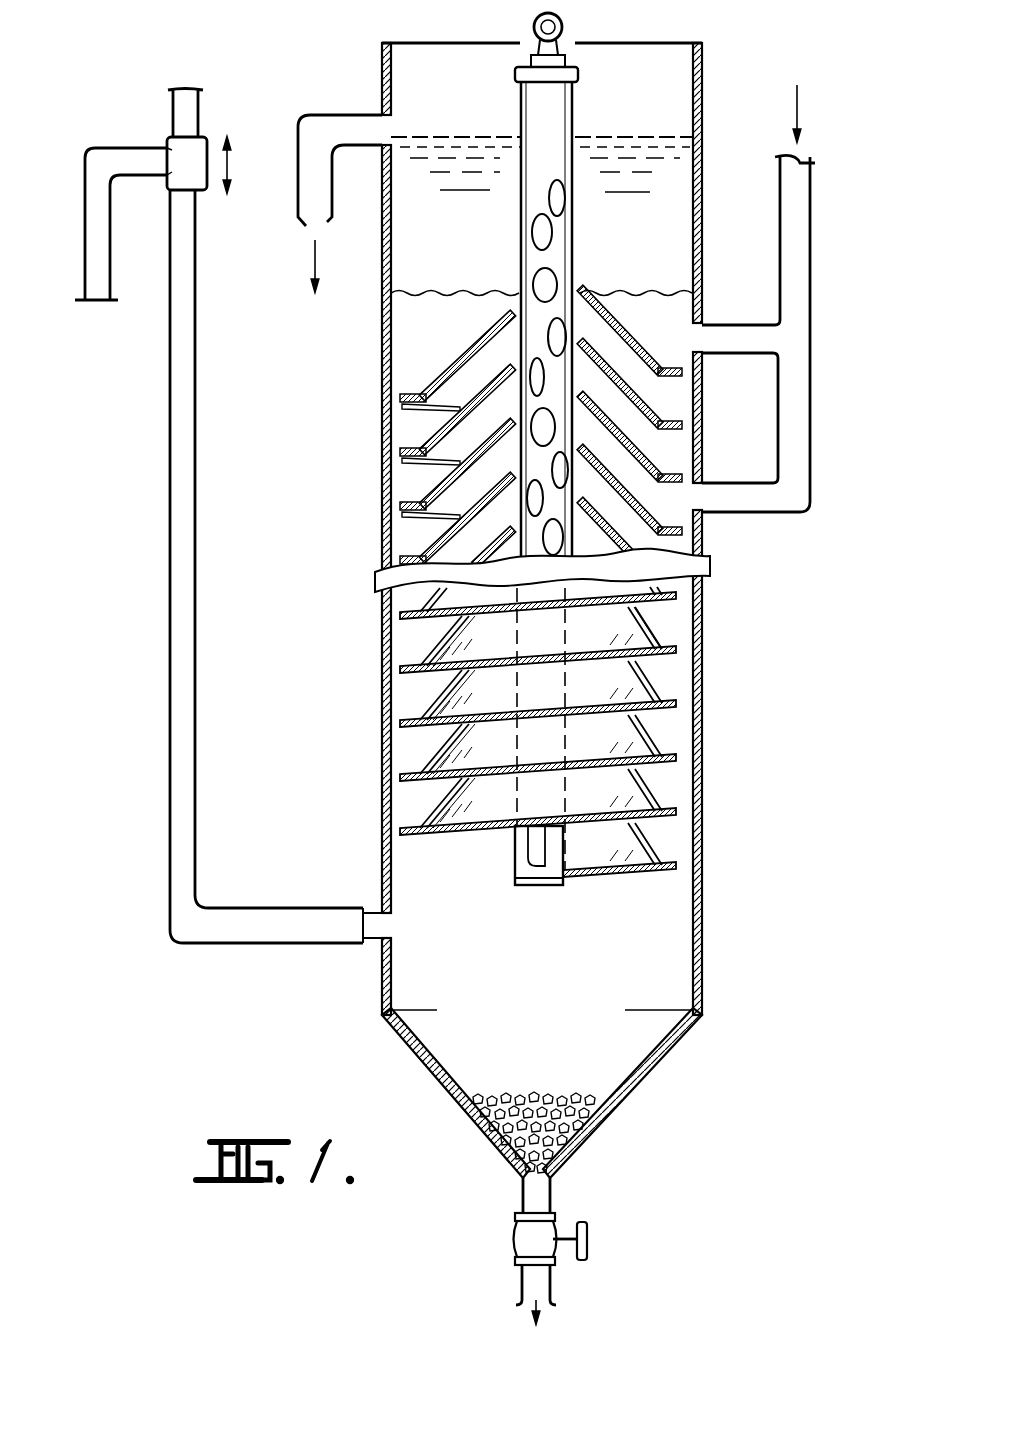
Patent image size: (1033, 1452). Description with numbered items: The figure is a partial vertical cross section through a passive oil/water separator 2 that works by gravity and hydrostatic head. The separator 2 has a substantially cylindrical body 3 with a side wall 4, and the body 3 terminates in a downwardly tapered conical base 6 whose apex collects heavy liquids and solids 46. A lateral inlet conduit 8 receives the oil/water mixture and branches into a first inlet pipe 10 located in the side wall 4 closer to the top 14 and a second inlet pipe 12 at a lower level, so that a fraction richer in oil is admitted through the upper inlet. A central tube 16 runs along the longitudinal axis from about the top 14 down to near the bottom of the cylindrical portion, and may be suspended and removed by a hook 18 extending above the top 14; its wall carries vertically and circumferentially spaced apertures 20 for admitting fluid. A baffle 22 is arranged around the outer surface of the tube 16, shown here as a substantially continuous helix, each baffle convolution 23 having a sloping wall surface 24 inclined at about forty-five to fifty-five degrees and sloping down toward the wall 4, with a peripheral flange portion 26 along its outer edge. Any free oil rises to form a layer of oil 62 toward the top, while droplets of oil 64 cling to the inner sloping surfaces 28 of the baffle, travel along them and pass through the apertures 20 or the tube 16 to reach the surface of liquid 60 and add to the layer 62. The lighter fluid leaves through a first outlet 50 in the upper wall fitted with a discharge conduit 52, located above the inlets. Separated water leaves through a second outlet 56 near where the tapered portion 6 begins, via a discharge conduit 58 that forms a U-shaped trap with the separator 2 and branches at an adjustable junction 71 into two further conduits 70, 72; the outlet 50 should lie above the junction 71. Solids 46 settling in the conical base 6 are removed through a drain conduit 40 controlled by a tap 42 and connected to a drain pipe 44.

The separator 2 is at (614, 590).
The cylindrical body 3 is at (703, 766).
The side wall 4 is at (703, 100).
The conical base 6 is at (658, 1072).
The inlet conduit 8 is at (797, 258).
The first inlet pipe 10 is at (733, 333).
The second inlet pipe 12 is at (742, 502).
The top 14 is at (658, 43).
The central tube 16 is at (558, 122).
The hook 18 is at (537, 22).
The apertures 20 is at (528, 247).
The baffle 22 is at (598, 284).
The baffle convolution 23 is at (467, 352).
The sloping wall surface 24 is at (440, 735).
The peripheral flange portion 26 is at (672, 380).
The inner sloping surface 28 is at (440, 530).
The drain conduit 40 is at (540, 1200).
The tap 42 is at (525, 1237).
The drain pipe 44 is at (535, 1288).
The solids 46 is at (575, 1130).
The first outlet 50 is at (382, 125).
The discharge conduit 52 is at (323, 182).
The second outlet 56 is at (385, 932).
The discharge conduit 58 is at (193, 812).
The surface of liquid 60 is at (437, 350).
The layer of oil 62 is at (663, 207).
The droplets of oil 64 is at (402, 411).
The branch conduit 70 is at (195, 120).
The junction 71 is at (197, 178).
The branch conduit 72 is at (133, 150).